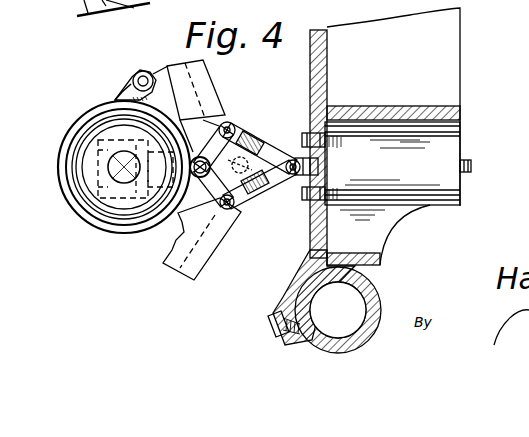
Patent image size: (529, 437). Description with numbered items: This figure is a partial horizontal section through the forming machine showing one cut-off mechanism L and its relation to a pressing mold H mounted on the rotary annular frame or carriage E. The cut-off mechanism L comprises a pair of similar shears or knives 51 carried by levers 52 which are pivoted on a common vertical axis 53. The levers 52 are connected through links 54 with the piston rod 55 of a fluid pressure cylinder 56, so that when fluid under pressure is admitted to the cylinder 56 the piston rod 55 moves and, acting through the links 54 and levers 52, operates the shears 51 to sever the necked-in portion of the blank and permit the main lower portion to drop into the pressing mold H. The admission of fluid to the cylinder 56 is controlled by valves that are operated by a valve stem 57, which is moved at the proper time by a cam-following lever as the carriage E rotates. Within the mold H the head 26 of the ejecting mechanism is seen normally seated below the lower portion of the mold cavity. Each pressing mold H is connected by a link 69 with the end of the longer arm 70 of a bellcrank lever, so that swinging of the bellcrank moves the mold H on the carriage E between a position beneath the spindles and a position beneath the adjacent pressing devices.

The head 26 is at (100, 168).
The pressing mold H is at (50, 176).
The shears 51 is at (180, 76).
The levers 52 is at (229, 118).
The common vertical axis 53 is at (250, 141).
The links 54 is at (273, 153).
The piston rod 55 is at (258, 184).
The fluid pressure cylinder 56 is at (462, 189).
The valve stem 57 is at (470, 166).
The link 69 is at (128, 96).
The longer arm 70 is at (134, 67).
The annular frame structure or carriage E is at (462, 80).
The cut-off mechanism L is at (221, 142).